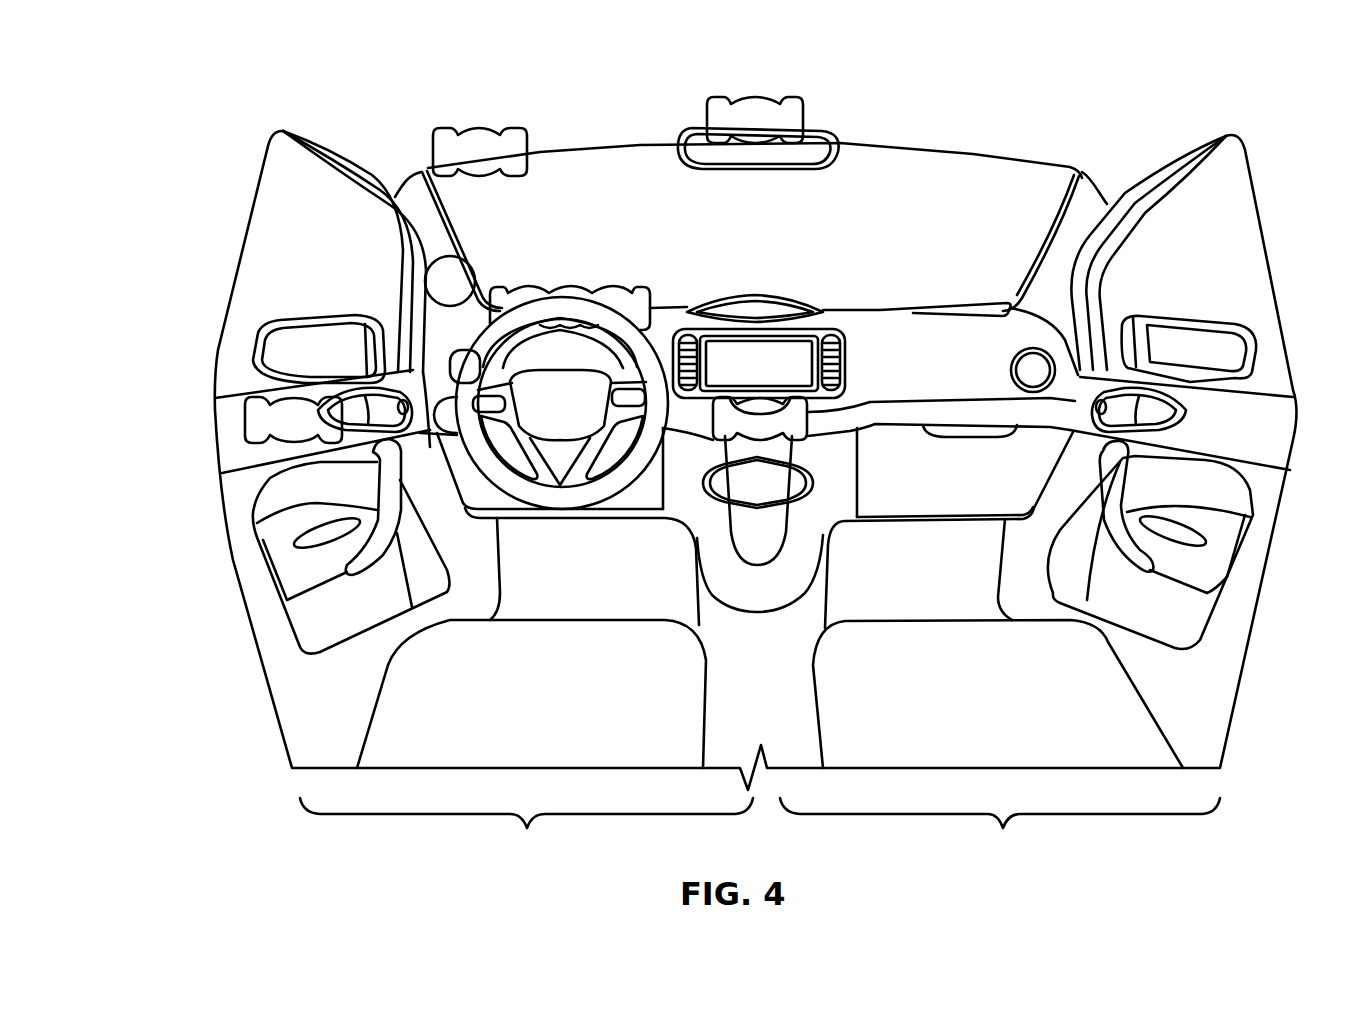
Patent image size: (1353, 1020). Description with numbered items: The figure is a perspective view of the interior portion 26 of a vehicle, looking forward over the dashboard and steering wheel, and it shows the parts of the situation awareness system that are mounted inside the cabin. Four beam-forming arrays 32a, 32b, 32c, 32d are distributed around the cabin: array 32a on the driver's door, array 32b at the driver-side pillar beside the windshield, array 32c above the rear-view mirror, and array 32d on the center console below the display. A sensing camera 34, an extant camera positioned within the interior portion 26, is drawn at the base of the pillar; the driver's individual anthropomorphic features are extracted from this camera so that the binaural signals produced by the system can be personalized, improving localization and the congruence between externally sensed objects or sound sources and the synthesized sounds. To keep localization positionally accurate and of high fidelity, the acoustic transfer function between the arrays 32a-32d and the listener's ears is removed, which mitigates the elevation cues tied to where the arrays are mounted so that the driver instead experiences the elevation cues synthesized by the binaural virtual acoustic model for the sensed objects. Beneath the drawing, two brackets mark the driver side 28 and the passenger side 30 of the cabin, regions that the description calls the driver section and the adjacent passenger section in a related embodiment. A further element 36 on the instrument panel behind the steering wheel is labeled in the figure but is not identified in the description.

The interior portion 26 is at (452, 68).
The driver side seating area 28 is at (526, 833).
The passenger side seating area 30 is at (1000, 833).
The beam-forming array 32a is at (245, 422).
The beam-forming array 32b is at (527, 143).
The beam-forming array 32c is at (803, 112).
The beam-forming array 32d is at (808, 408).
The sensing camera 34 is at (467, 261).
The sensor (steering wheel / instrument panel) 36 is at (648, 290).